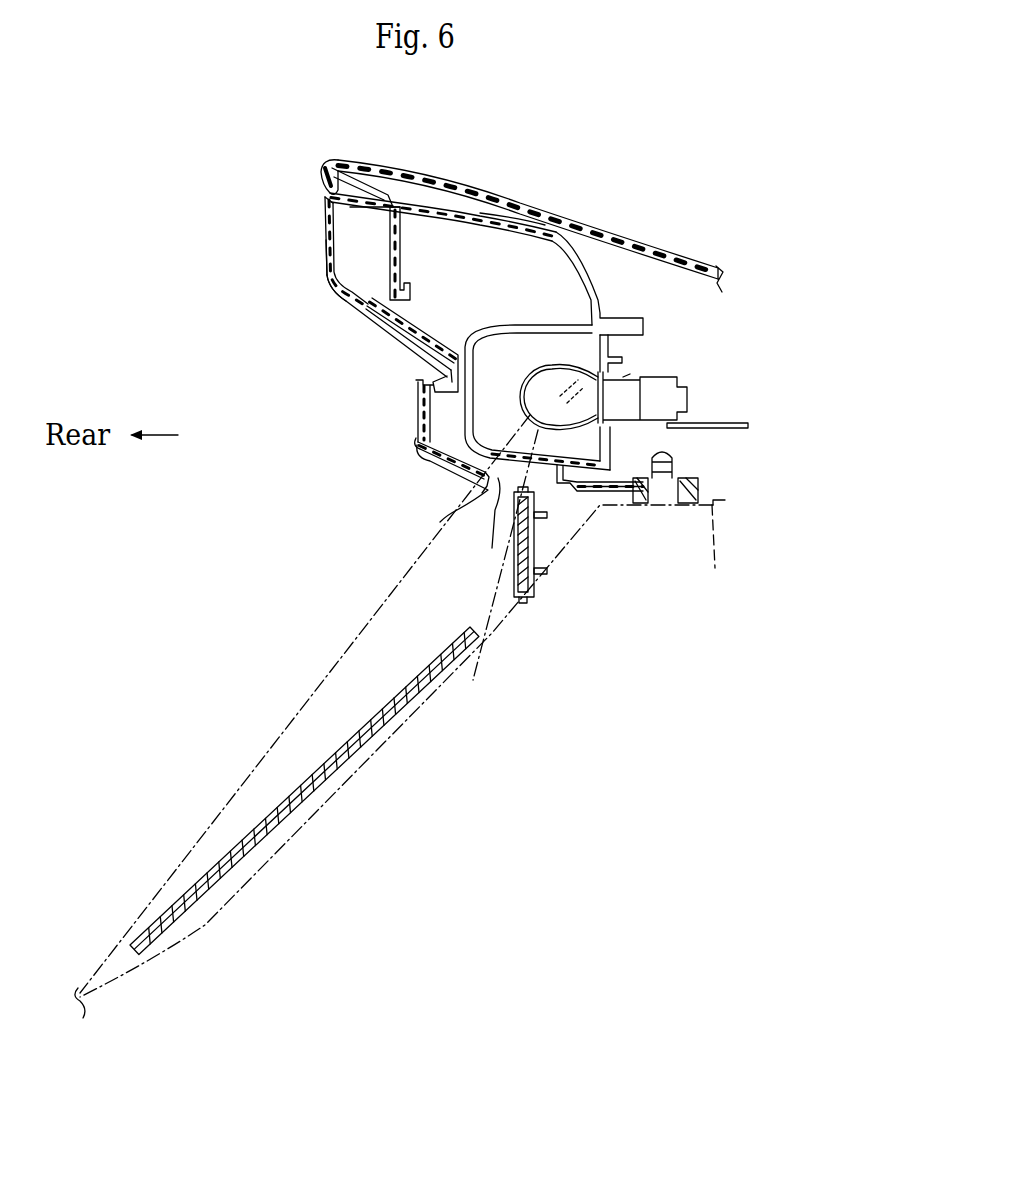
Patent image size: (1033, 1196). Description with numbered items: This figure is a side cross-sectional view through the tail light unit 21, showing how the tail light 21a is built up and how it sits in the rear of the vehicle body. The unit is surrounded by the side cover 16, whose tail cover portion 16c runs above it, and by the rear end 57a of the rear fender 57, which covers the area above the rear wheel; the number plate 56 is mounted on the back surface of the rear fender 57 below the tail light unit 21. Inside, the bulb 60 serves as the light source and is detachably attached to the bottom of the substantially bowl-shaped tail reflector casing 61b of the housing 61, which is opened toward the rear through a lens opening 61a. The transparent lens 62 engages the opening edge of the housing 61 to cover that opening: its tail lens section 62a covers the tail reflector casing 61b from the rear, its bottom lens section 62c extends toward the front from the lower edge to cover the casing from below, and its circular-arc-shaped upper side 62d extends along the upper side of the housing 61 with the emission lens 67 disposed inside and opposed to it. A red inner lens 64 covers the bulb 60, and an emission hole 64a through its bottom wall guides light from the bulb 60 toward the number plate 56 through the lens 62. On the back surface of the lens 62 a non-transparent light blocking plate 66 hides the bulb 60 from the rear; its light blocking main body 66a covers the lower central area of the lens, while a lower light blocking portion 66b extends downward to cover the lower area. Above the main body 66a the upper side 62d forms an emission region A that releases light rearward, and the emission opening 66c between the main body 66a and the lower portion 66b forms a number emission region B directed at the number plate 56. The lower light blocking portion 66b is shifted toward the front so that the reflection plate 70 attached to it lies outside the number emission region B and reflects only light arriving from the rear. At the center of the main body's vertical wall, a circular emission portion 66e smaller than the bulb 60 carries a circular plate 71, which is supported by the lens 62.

The side cover 16 is at (693, 247).
The tail cover portion 16c is at (537, 206).
The tail light unit 21 is at (268, 218).
The tail light 21a is at (678, 362).
The number plate 56 is at (224, 848).
The rear fender 57 is at (572, 578).
The rear end of rear fender 57a is at (713, 500).
The bulb 60 is at (543, 363).
The housing 61 is at (504, 251).
The lens opening 61a is at (353, 213).
The tail reflector casing 61b is at (500, 220).
The lens 62 is at (312, 261).
The tail lens section 62a is at (334, 297).
The bottom lens section 62c is at (453, 514).
The upper side of tail lens section 62d is at (318, 275).
The inner lens 64 is at (507, 320).
The emission hole 64a is at (498, 435).
The light blocking plate 66 is at (366, 328).
The light blocking main body 66a is at (405, 363).
The lower light blocking portion 66b is at (530, 594).
The emission opening 66c is at (458, 482).
The emission portion 66e is at (408, 442).
The emission lens 67 is at (412, 246).
The reflection plate 70 is at (510, 572).
The circular plate 71 is at (408, 412).
The emission region A is at (318, 228).
The number emission region B is at (477, 549).